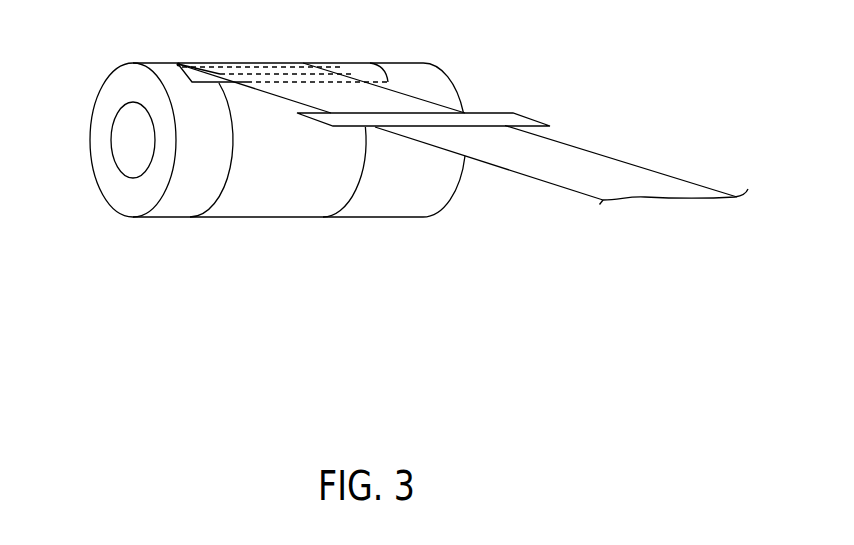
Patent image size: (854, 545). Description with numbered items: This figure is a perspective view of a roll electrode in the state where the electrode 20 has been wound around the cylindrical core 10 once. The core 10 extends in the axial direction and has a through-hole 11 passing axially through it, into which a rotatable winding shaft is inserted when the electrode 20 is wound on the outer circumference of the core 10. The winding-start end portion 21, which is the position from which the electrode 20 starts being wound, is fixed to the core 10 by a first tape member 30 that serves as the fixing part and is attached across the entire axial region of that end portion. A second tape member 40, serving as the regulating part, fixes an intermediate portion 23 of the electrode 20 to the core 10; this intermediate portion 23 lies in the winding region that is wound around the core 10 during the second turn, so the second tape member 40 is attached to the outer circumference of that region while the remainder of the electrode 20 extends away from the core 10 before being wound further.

The core 10 is at (106, 111).
The through-hole 11 is at (121, 126).
The electrode 20 is at (614, 172).
The winding-start end portion 21 is at (253, 74).
The intermediate portion 23 is at (458, 107).
The first tape member 30 is at (362, 112).
The second tape member 40 is at (513, 114).